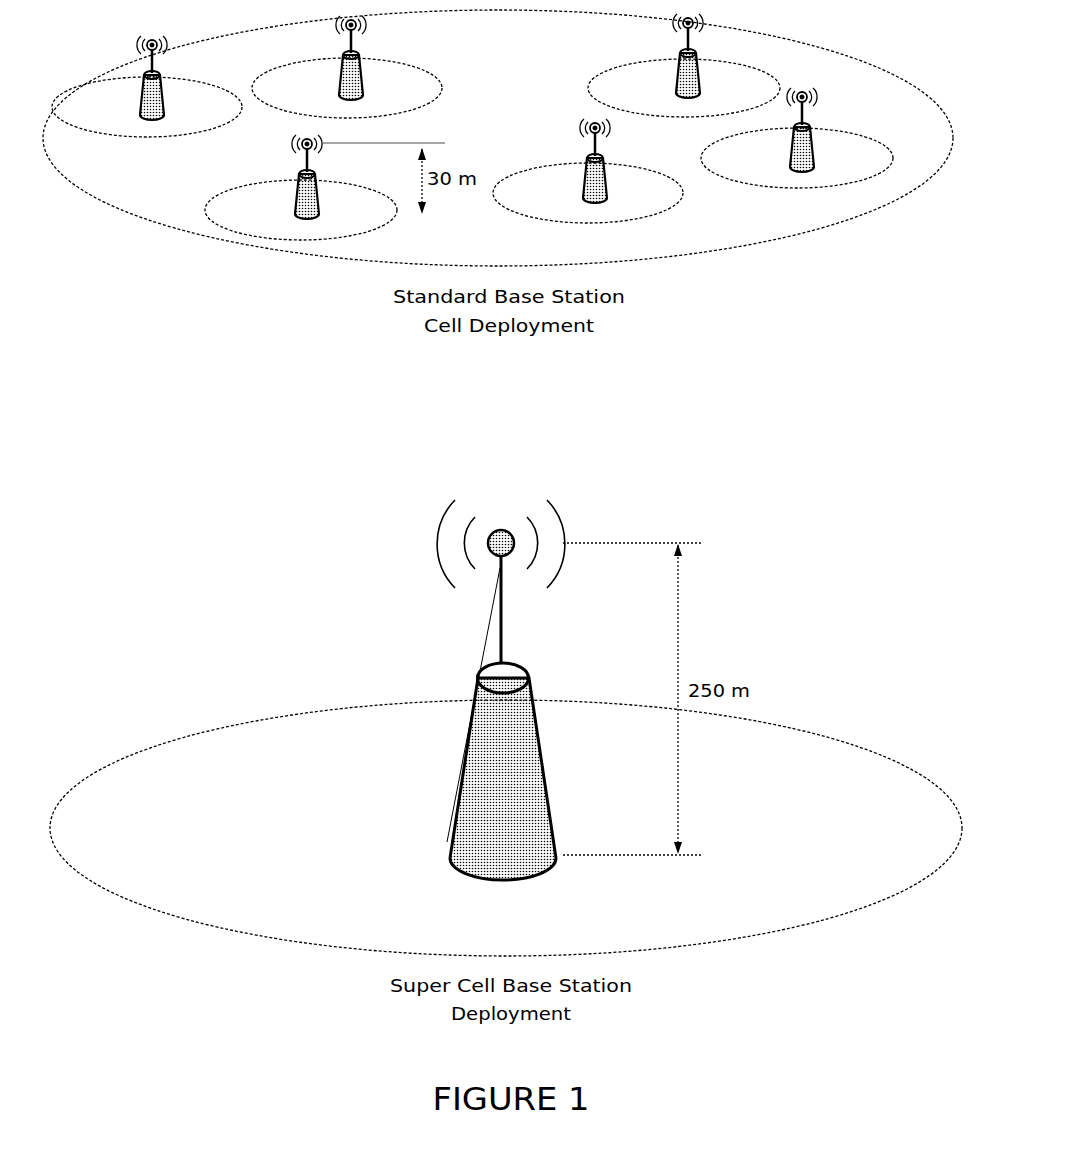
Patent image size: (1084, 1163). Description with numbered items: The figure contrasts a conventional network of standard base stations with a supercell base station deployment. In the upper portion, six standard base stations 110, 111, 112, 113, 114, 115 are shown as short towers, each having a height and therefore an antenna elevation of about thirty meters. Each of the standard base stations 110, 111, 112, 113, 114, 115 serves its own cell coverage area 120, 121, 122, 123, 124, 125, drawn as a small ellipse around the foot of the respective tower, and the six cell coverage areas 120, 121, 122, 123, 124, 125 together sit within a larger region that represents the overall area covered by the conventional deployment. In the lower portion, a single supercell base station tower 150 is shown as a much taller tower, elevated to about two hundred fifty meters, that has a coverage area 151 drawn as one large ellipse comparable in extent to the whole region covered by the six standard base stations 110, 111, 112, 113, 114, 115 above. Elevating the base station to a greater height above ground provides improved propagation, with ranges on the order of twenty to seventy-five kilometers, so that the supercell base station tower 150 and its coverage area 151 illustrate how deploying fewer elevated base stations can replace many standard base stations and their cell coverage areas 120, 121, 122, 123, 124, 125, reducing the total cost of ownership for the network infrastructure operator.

The standard base station 110 is at (156, 74).
The standard base station 111 is at (356, 54).
The standard base station 112 is at (302, 173).
The standard base station 113 is at (589, 157).
The standard base station 114 is at (683, 56).
The standard base station 115 is at (807, 125).
The cell coverage area 120 is at (180, 123).
The cell coverage area 121 is at (416, 91).
The cell coverage area 122 is at (233, 204).
The cell coverage area 123 is at (537, 212).
The cell coverage area 124 is at (623, 83).
The cell coverage area 125 is at (780, 172).
The supercell base station tower 150 is at (500, 688).
The coverage area 151 is at (250, 875).